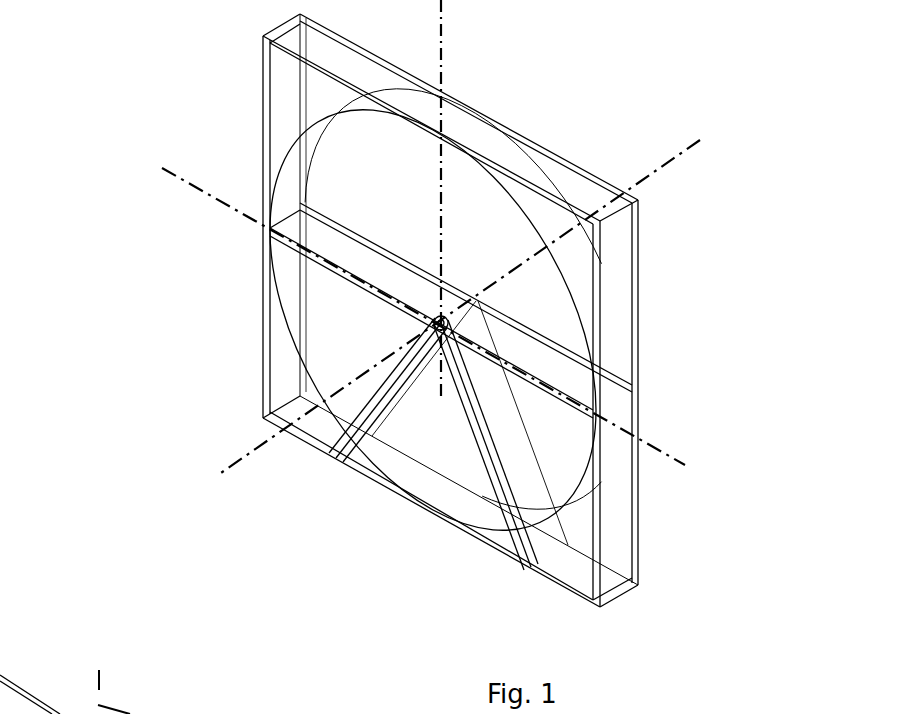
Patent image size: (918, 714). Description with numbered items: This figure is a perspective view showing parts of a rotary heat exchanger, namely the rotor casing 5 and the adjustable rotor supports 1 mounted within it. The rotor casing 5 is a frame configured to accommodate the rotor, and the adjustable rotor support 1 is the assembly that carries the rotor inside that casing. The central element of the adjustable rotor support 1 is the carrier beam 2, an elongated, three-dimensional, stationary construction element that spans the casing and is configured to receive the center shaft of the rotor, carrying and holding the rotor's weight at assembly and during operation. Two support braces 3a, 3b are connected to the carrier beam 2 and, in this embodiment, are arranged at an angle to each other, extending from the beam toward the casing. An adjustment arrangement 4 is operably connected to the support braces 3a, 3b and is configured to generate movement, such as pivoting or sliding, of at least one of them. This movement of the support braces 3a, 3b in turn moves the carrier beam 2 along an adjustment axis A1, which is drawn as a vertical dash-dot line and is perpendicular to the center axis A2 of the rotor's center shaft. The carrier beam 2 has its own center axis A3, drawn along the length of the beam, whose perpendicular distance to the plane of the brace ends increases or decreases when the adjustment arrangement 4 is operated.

The adjustable rotor support 1 is at (352, 291).
The carrier beam 2 is at (343, 266).
The support brace 3a is at (390, 393).
The support brace 3b is at (526, 443).
The adjustment arrangement 4 is at (396, 332).
The rotor casing 5 is at (293, 97).
The adjustment axis A1 is at (441, 3).
The center axis A2 is at (682, 150).
The center axis of the carrier beam A3 is at (190, 192).